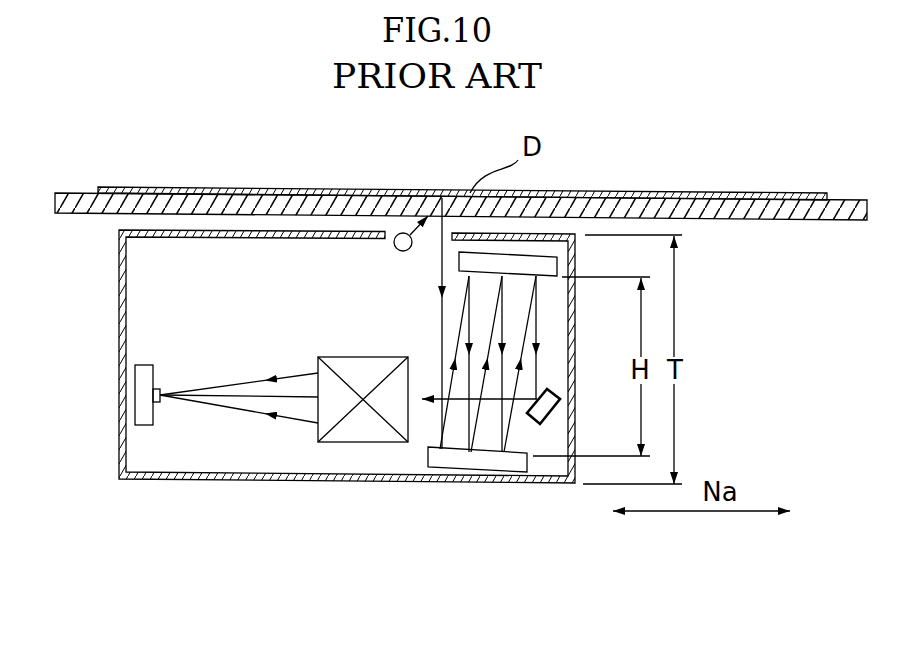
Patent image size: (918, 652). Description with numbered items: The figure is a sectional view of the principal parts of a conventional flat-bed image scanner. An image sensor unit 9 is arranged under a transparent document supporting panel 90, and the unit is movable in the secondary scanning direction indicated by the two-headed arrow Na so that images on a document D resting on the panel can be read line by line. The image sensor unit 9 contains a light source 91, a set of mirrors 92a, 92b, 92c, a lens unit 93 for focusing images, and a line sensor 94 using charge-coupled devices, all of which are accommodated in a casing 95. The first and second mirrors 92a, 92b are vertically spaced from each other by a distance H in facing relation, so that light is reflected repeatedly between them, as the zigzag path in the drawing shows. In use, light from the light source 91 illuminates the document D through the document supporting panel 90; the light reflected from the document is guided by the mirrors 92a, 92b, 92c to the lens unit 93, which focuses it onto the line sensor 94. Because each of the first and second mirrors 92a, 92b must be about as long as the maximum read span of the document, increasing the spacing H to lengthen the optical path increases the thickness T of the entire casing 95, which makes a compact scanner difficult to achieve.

The transparent document supporting panel 90 is at (80, 207).
The image sensor unit 9 is at (103, 291).
The casing 95 is at (120, 335).
The light source 91 is at (396, 249).
The first mirror 92a is at (485, 458).
The second mirror 92b is at (557, 264).
The third mirror 92c is at (558, 399).
The lens unit 93 is at (358, 435).
The line sensor 94 is at (160, 414).